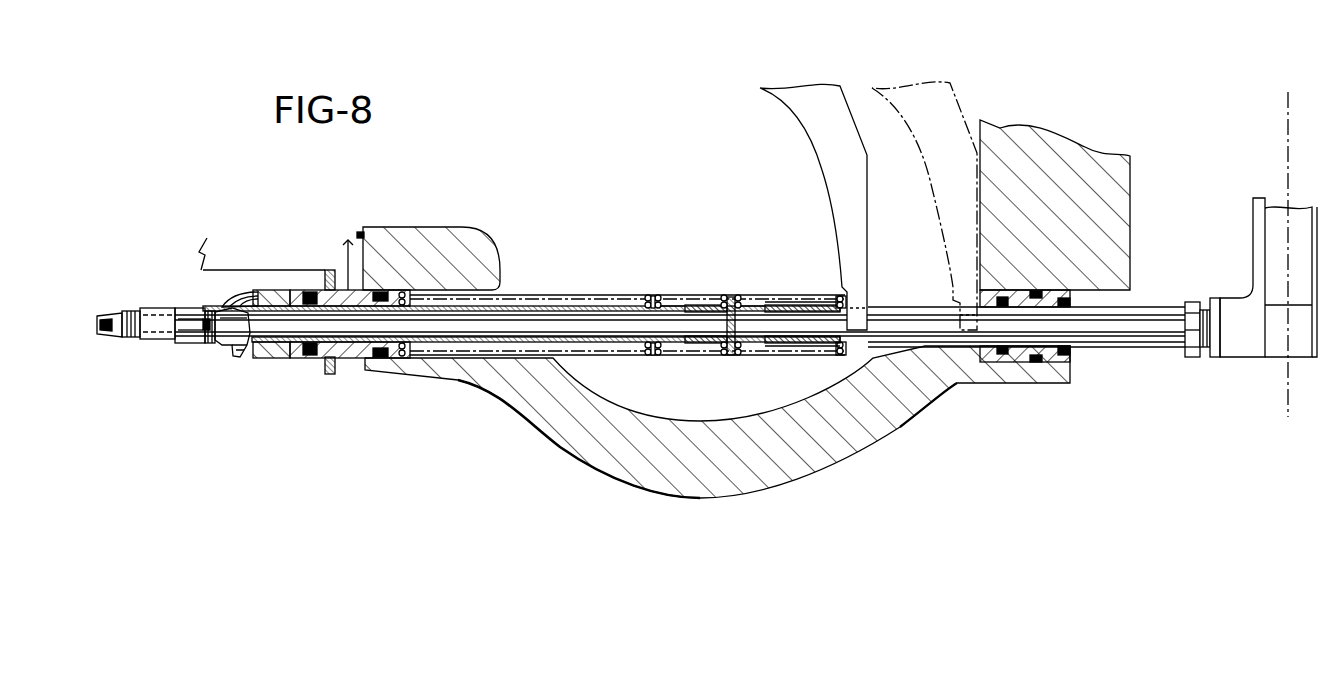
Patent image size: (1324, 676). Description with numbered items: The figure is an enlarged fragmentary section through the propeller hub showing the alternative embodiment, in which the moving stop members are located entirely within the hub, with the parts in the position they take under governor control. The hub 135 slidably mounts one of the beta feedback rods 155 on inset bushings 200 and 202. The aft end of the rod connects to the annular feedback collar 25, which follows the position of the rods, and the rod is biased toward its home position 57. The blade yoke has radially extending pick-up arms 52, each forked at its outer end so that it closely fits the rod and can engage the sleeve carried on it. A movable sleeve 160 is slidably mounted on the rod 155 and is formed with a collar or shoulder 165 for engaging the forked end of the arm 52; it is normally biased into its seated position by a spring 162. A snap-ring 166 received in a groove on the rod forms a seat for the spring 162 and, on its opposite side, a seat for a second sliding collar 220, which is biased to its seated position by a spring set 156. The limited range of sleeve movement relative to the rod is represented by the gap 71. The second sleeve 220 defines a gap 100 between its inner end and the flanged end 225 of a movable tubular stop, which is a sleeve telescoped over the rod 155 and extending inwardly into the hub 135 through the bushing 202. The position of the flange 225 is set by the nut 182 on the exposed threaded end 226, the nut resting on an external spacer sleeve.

The annular feedback collar 25 is at (1313, 360).
The yoke arm 52 is at (797, 127).
The home position 57 is at (1286, 147).
The gap 71 is at (764, 290).
The gap 100 is at (685, 282).
The hub 135 is at (783, 487).
The beta feedback rod 155 is at (1100, 347).
The spring set 156 is at (702, 352).
The movable sleeve 160 is at (782, 305).
The spring 162 is at (798, 352).
The collar or shoulder 165 is at (838, 296).
The snap-ring 166 is at (728, 352).
The nut 182 is at (240, 297).
The inset bushing 200 is at (1095, 293).
The inset bushing 202 is at (350, 358).
The second sliding collar 220 is at (702, 305).
The flanged end 225 is at (268, 358).
The exposed threaded end 226 is at (213, 298).